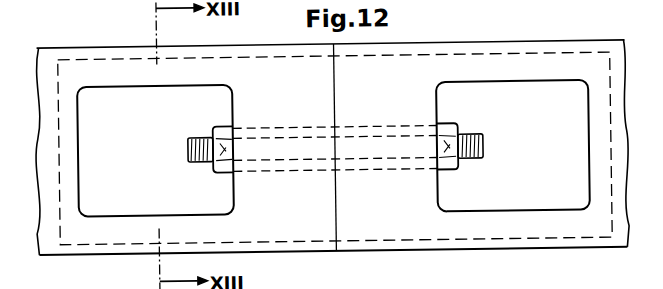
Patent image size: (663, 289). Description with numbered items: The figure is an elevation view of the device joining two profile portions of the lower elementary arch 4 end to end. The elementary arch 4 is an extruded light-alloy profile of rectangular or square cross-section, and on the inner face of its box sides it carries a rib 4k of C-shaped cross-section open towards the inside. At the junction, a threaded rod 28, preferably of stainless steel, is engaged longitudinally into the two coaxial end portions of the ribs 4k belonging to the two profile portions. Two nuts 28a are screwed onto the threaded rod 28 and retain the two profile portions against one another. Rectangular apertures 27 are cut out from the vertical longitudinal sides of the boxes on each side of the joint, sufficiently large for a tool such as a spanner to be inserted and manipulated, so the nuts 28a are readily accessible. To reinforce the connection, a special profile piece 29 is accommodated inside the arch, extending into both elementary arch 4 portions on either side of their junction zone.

The lower elementary arch 4 is at (383, 46).
The rib of C-shaped cross-section 4k is at (285, 127).
The rectangular apertures 27 is at (113, 80).
The threaded rod 28 is at (194, 137).
The nuts 28a is at (223, 125).
The special profile piece 29 is at (57, 73).